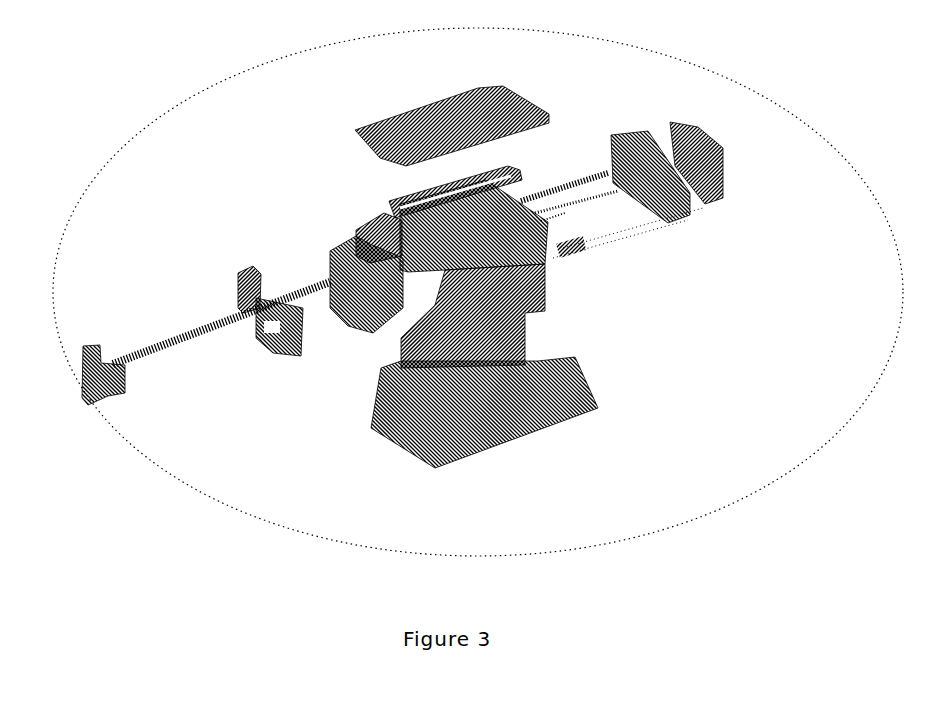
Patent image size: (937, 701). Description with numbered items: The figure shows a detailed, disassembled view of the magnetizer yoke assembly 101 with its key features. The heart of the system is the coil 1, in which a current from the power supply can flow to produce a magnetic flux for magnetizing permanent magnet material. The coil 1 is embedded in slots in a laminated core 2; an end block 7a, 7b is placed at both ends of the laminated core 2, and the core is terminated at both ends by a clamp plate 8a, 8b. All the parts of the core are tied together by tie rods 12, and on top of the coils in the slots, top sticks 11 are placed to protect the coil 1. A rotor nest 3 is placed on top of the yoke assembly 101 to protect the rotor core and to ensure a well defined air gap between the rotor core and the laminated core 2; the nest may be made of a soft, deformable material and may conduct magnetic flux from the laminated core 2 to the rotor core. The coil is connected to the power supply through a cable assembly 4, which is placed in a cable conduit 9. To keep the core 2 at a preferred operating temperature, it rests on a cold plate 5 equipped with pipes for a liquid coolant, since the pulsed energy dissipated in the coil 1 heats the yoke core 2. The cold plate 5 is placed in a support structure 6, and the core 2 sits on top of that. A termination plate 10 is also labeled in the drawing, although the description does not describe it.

The coil 1 is at (388, 190).
The laminated core 2 is at (520, 252).
The rotor nest 3 is at (418, 108).
The cable assembly 4 is at (200, 313).
The cold plate 5 is at (547, 303).
The support structure 6 is at (590, 415).
The end block 7a is at (318, 240).
The end block 7b is at (638, 133).
The clamp plate 8a is at (230, 282).
The clamp plate 8b is at (697, 133).
The cable conduit 9 is at (107, 387).
The Termination Plate 10 is at (360, 220).
The top sticks 11 is at (562, 167).
The tie rods 12 is at (553, 242).
The magnetizer yoke assembly 101 is at (652, 527).